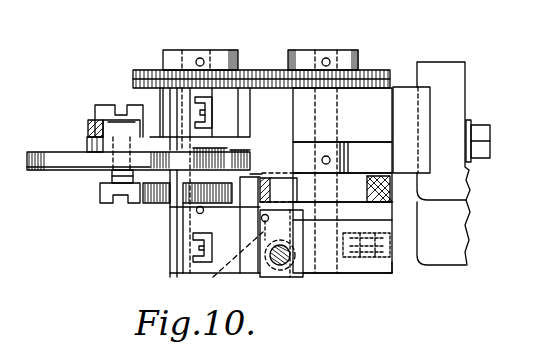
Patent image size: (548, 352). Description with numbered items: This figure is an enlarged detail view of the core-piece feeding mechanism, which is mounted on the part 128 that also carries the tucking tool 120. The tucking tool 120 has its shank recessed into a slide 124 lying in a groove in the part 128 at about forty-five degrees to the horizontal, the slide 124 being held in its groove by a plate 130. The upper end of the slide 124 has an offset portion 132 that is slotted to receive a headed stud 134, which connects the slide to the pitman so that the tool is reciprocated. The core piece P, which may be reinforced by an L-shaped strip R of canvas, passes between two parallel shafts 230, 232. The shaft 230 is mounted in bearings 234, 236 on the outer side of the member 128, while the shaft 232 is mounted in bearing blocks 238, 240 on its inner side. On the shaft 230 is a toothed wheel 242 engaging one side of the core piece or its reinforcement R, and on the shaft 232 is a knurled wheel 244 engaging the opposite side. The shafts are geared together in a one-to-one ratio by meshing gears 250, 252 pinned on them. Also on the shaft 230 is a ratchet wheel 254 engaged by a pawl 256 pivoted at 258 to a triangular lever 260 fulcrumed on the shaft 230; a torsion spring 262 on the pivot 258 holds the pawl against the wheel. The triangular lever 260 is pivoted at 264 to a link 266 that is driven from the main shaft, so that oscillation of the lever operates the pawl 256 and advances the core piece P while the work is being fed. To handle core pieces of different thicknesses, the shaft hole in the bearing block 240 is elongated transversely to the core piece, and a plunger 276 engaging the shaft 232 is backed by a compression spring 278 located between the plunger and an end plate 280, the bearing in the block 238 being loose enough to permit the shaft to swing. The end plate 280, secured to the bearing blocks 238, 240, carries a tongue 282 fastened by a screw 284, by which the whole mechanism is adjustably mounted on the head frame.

The tucking tool 120 is at (279, 210).
The slide 124 is at (220, 263).
The part 128 is at (300, 108).
The plate 130 is at (247, 264).
The offset portion 132 is at (302, 276).
The headed stud 134 is at (281, 266).
The shaft 230 is at (200, 50).
The shaft 232 is at (326, 49).
The bearing 234 is at (173, 107).
The bearing 236 is at (170, 250).
The bearing block 238 is at (381, 133).
The bearing block 240 is at (360, 277).
The toothed wheel 242 is at (163, 198).
The knurled wheel 244 is at (388, 198).
The gear 250 is at (234, 80).
The gear 252 is at (373, 70).
The ratchet wheel 254 is at (228, 163).
The pawl 256 is at (168, 160).
The pivot 258 is at (100, 195).
The triangular lever 260 is at (100, 148).
The torsion spring 262 is at (112, 174).
The pivot 264 is at (113, 110).
The link 266 is at (90, 120).
The plunger 276 is at (352, 262).
The compression spring 278 is at (381, 262).
The end plate 280 is at (403, 263).
The tongue 282 is at (470, 248).
The screw 284 is at (491, 145).
The L-shaped strip R is at (250, 174).
The core piece P is at (260, 174).